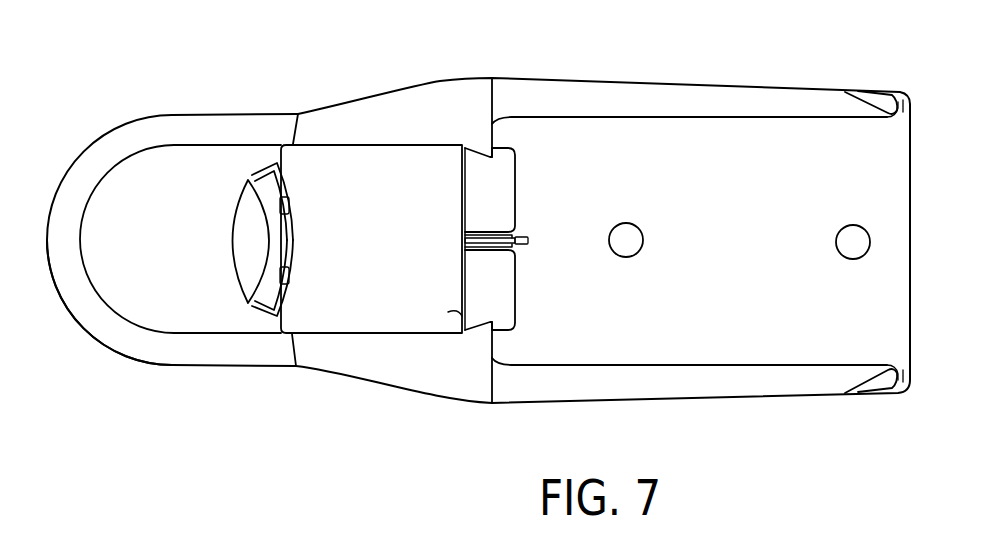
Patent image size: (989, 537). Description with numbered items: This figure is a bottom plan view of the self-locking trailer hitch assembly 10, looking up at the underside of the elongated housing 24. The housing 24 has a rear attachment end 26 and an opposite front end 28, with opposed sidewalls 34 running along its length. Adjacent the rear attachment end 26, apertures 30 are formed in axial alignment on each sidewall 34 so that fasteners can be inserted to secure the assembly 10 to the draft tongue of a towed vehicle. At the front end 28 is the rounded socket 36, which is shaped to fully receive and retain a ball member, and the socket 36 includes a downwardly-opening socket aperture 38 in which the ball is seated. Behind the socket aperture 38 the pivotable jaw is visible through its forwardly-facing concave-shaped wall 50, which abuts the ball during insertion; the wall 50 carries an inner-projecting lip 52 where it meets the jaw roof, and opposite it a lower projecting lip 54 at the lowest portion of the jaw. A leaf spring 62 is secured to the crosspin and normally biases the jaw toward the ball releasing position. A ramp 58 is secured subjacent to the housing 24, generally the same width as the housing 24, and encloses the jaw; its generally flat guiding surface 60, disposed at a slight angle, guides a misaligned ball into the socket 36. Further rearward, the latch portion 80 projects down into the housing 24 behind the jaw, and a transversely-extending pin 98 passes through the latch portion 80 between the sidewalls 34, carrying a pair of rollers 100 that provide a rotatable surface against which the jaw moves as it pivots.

The self-locking trailer hitch assembly 10 is at (277, 104).
The housing 24 is at (769, 80).
The rear attachment end 26 is at (845, 74).
The front end 28 is at (101, 104).
The apertures 30 is at (644, 240).
The sidewalls 34 is at (578, 78).
The socket 36 is at (72, 317).
The socket aperture 38 is at (118, 247).
The concave-shaped wall 50 is at (252, 243).
The lip 52 is at (240, 186).
The lower lip 54 is at (245, 300).
The ramp 58 is at (448, 312).
The guiding surface 60 is at (377, 238).
The leaf spring 62 is at (289, 193).
The latch portion 80 is at (530, 242).
The pin 98 is at (487, 234).
The rollers 100 is at (518, 172).